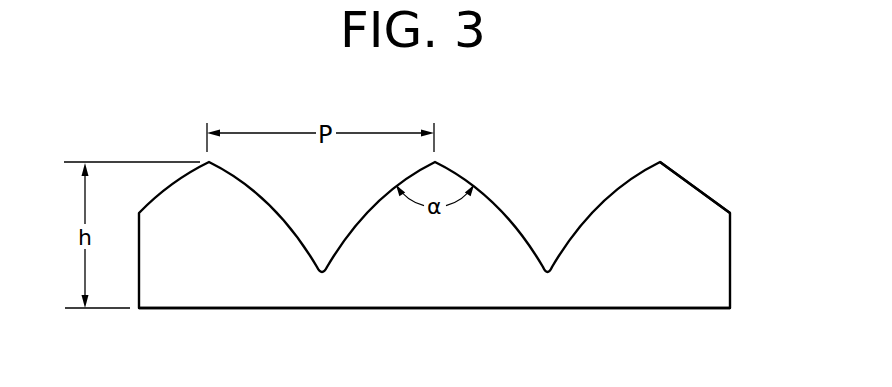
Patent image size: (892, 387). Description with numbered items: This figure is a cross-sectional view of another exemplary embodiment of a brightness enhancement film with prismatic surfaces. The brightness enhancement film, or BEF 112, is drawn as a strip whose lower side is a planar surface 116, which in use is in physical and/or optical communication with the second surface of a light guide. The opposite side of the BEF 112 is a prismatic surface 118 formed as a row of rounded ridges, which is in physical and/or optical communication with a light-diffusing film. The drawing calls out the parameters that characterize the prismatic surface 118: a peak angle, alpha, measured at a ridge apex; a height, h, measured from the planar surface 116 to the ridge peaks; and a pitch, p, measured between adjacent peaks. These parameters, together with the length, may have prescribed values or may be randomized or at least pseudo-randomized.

The brightness enhancement film 112 is at (748, 171).
The planar surface 116 is at (317, 308).
The prismatic surface 118 is at (694, 184).